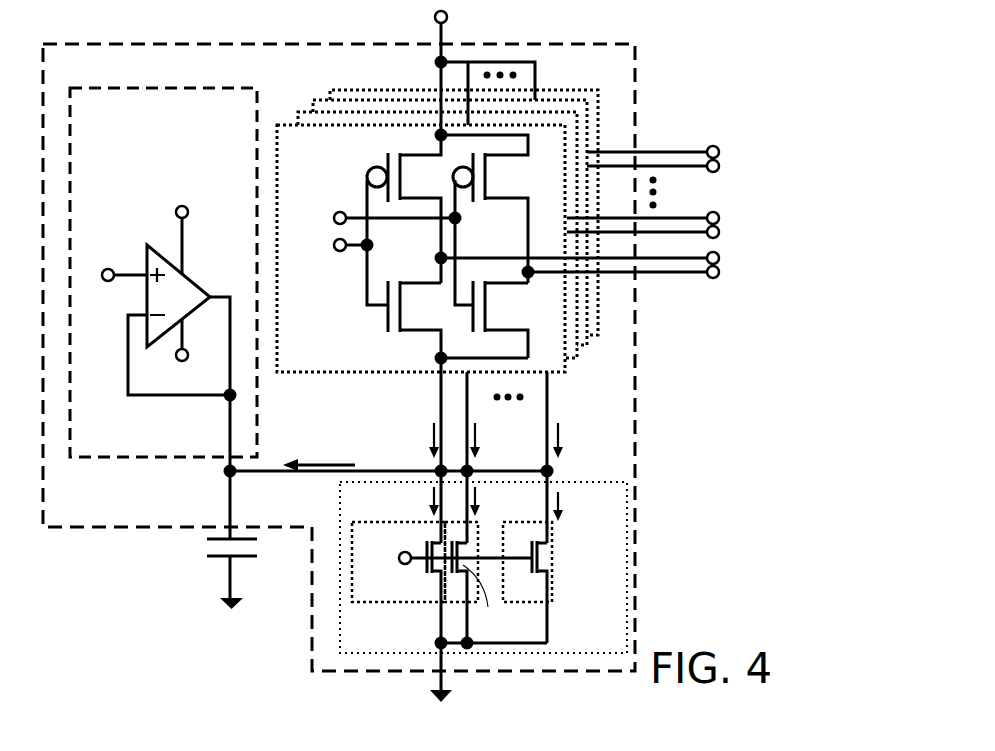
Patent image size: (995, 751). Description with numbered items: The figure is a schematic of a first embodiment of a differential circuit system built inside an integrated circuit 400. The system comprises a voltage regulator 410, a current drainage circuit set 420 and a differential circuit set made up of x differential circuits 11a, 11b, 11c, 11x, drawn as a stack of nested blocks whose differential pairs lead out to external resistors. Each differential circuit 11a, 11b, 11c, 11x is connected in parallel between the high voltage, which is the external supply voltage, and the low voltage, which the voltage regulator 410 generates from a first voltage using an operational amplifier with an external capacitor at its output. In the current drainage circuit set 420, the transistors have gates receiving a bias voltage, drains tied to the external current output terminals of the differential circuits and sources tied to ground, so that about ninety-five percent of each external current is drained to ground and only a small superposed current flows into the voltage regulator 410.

The integrated circuit 400 is at (628, 115).
The voltage regulator 410 is at (238, 100).
The current drainage circuit set 420 is at (600, 545).
The differential circuit 11a is at (560, 362).
The differential circuit 11b is at (577, 350).
The differential circuit 11c is at (590, 338).
The differential circuit 11x is at (597, 323).